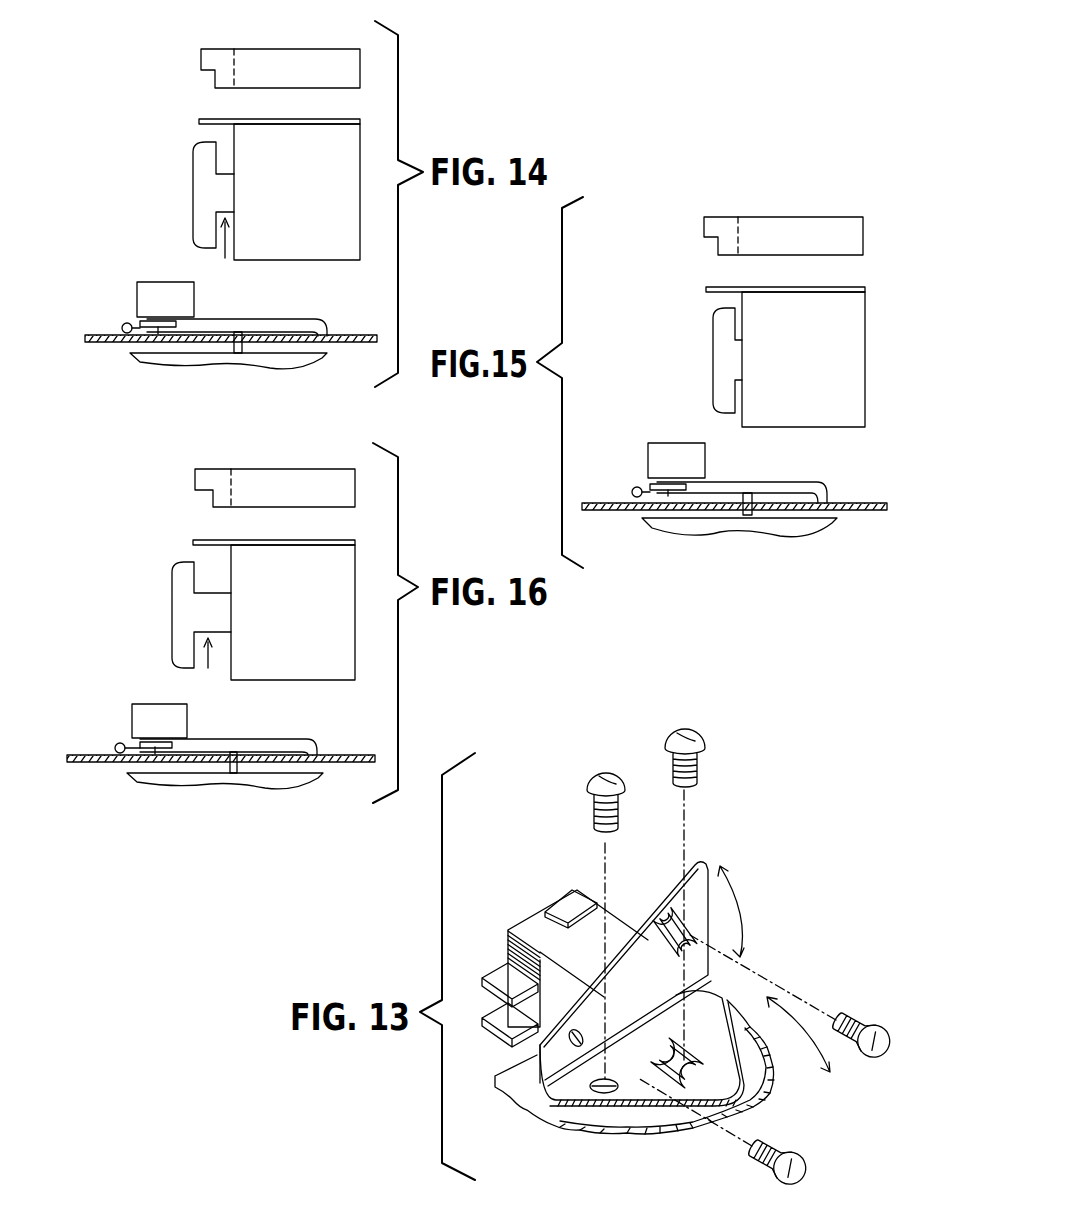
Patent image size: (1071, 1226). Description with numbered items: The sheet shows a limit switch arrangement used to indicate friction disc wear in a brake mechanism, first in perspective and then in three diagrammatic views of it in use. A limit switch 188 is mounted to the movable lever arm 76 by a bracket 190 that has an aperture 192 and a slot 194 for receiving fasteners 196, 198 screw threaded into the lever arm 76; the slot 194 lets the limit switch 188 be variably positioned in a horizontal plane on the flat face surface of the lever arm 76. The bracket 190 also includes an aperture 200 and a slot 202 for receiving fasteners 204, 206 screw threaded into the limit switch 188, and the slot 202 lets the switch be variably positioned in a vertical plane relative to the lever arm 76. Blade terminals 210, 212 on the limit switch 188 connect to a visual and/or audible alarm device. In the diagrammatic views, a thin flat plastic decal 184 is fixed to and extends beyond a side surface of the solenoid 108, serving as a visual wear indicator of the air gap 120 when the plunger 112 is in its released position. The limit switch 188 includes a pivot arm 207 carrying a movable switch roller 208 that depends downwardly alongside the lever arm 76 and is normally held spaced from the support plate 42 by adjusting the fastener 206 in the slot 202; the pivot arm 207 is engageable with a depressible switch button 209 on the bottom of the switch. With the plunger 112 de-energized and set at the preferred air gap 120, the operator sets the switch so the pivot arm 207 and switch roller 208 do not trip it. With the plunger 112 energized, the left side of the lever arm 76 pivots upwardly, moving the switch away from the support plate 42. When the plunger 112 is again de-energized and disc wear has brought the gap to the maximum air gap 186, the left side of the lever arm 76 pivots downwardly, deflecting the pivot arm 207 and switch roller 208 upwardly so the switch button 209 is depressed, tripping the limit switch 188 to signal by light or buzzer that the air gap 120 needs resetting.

In FIG. 14, the support plate 42 is at (340, 342).
In FIG. 15, the support plate 42 is at (843, 500).
In FIG. 16, the support plate 42 is at (345, 767).
In FIG. 14, the lever arm 76 is at (275, 318).
In FIG. 15, the lever arm 76 is at (775, 482).
In FIG. 16, the lever arm 76 is at (250, 738).
In FIG. 13, the lever arm 76 is at (677, 1000).
In FIG. 14, the solenoid 108 is at (338, 258).
In FIG. 15, the solenoid 108 is at (858, 348).
In FIG. 16, the solenoid 108 is at (330, 678).
In FIG. 14, the plunger 112 is at (200, 192).
In FIG. 15, the plunger 112 is at (717, 352).
In FIG. 16, the plunger 112 is at (175, 610).
In FIG. 14, the air gap 120 is at (230, 255).
In FIG. 14, the decal 184 is at (278, 118).
In FIG. 15, the decal 184 is at (785, 285).
In FIG. 16, the decal 184 is at (265, 538).
In FIG. 16, the maximum air gap 186 is at (205, 671).
In FIG. 14, the limit switch 188 is at (158, 292).
In FIG. 15, the limit switch 188 is at (663, 452).
In FIG. 16, the limit switch 188 is at (135, 725).
In FIG. 13, the limit switch 188 is at (555, 936).
In FIG. 13, the bracket 190 is at (703, 913).
In FIG. 13, the aperture 192 is at (607, 1093).
In FIG. 13, the slot 194 is at (673, 1050).
In FIG. 13, the fastener 196 is at (595, 776).
In FIG. 13, the fastener 198 is at (683, 730).
In FIG. 13, the aperture 200 is at (583, 1033).
In FIG. 13, the slot 202 is at (667, 927).
In FIG. 13, the fastener 204 is at (803, 1167).
In FIG. 13, the fastener 206 is at (888, 1030).
In FIG. 14, the pivot arm 207 is at (158, 334).
In FIG. 15, the pivot arm 207 is at (668, 496).
In FIG. 16, the pivot arm 207 is at (155, 754).
In FIG. 14, the switch roller 208 is at (122, 325).
In FIG. 15, the switch roller 208 is at (633, 490).
In FIG. 16, the switch roller 208 is at (118, 743).
In FIG. 14, the switch button 209 is at (138, 325).
In FIG. 15, the switch button 209 is at (650, 487).
In FIG. 13, the blade terminal 210 is at (558, 910).
In FIG. 13, the blade terminal 212 is at (503, 1018).